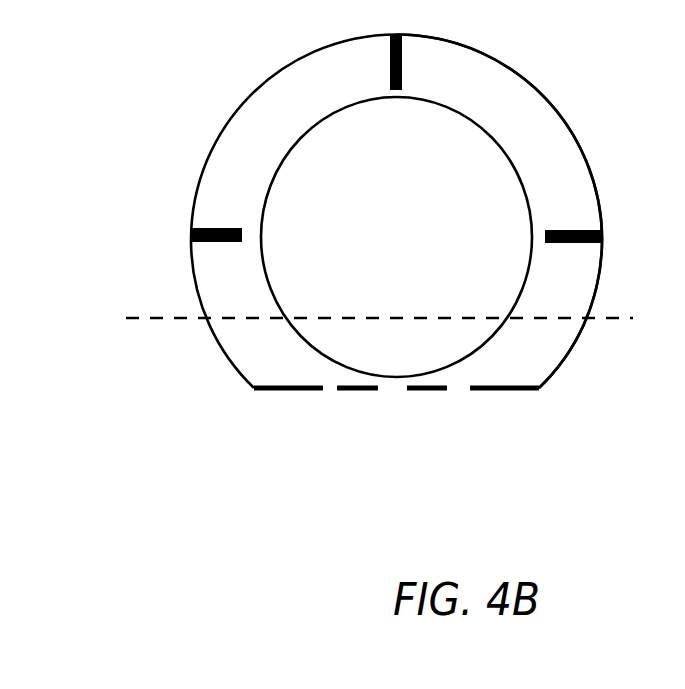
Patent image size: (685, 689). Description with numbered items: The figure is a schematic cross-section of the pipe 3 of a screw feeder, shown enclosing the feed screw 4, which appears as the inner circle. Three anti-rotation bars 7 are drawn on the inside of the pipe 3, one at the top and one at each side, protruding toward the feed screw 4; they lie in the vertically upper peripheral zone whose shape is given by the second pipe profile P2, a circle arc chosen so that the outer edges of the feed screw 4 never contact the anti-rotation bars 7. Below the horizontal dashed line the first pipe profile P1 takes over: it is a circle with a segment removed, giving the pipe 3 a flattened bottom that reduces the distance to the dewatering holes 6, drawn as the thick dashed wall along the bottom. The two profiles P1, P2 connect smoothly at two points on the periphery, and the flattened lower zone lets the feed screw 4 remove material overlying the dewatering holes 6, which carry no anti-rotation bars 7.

The pipe 3 is at (282, 62).
The feed screw 4 is at (493, 337).
The dewatering holes 6 is at (337, 392).
The anti-rotation bars 7 is at (570, 243).
The first pipe profile P1 is at (230, 360).
The second pipe profile P2 is at (589, 160).